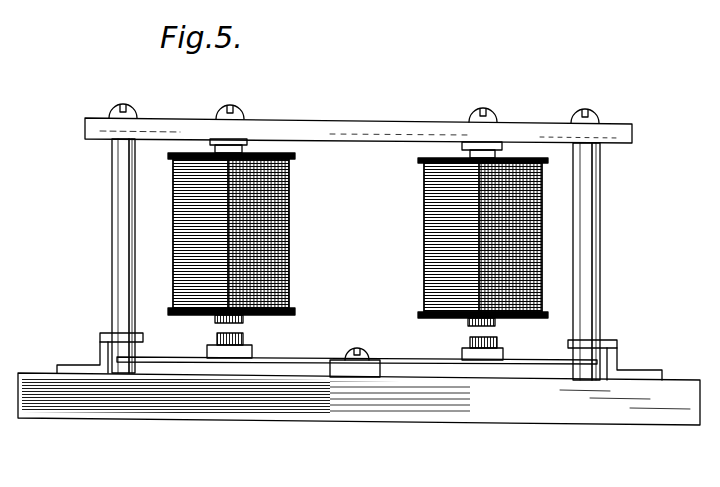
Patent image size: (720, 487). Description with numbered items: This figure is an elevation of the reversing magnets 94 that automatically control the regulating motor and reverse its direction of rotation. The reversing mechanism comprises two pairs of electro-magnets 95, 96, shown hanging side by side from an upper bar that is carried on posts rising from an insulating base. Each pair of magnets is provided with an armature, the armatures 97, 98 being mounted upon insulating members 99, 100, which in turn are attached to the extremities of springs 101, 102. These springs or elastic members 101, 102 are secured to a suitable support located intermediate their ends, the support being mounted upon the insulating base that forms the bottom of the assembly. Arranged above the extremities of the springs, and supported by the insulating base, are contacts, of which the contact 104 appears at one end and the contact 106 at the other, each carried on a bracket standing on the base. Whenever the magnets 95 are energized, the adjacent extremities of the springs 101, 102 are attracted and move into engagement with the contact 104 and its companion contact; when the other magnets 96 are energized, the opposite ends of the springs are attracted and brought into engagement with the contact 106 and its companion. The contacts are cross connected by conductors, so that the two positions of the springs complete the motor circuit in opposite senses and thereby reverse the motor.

The reversing magnets 94 is at (386, 412).
The electro-magnets 95 is at (290, 195).
The electro-magnets 96 is at (418, 224).
The armature 97 is at (246, 343).
The armature 98 is at (470, 342).
The insulating member 99 is at (208, 349).
The insulating member 100 is at (500, 357).
The spring 101 is at (300, 358).
The spring 102 is at (418, 360).
The contact 104 is at (100, 337).
The contact 106 is at (612, 343).